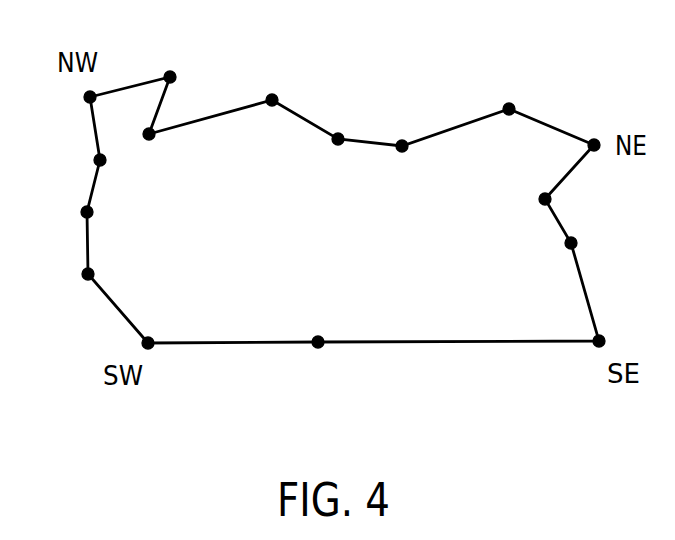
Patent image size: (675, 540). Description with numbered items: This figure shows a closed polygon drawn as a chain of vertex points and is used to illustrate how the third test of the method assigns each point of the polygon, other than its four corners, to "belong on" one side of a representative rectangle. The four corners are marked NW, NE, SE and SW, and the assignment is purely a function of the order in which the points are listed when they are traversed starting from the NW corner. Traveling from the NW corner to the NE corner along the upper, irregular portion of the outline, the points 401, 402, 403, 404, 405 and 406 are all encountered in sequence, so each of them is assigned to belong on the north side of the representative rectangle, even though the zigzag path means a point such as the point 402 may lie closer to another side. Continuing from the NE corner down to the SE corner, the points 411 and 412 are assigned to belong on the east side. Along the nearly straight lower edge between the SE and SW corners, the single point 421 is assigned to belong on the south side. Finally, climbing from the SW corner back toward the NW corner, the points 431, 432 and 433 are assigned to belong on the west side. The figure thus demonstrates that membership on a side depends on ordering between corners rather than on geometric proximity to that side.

The polygon point 401 is at (169, 72).
The polygon point 402 is at (149, 140).
The polygon point 403 is at (273, 97).
The polygon point 404 is at (338, 145).
The polygon point 405 is at (403, 142).
The polygon point 406 is at (509, 115).
The polygon point 411 is at (551, 199).
The polygon point 412 is at (577, 243).
The polygon point 421 is at (318, 348).
The polygon point 431 is at (85, 277).
The polygon point 432 is at (82, 212).
The polygon point 433 is at (95, 160).